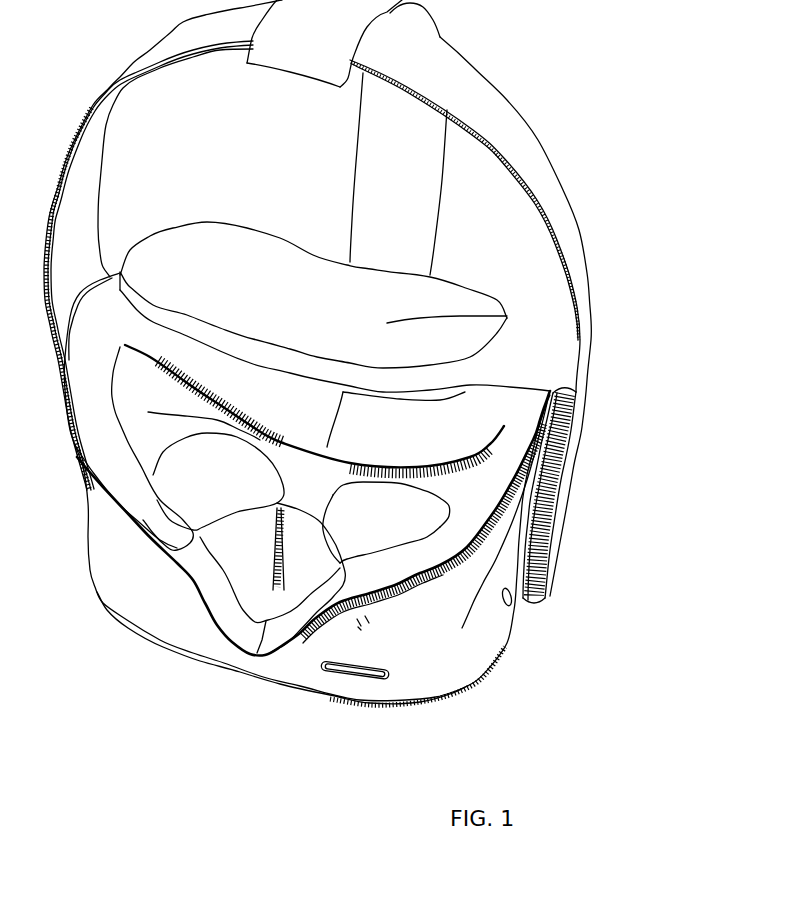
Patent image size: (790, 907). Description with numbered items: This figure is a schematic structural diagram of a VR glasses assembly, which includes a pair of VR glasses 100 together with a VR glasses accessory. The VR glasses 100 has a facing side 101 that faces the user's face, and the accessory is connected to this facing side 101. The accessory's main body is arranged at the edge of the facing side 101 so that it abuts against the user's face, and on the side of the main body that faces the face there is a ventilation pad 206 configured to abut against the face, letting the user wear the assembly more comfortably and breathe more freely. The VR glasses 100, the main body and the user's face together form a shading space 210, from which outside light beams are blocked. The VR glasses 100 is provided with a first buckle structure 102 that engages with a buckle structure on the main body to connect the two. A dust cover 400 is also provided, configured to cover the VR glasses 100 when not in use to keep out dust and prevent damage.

The VR glasses 100 is at (453, 630).
The facing side 101 is at (480, 555).
The first buckle structure 102 is at (373, 623).
The ventilation pad 206 is at (447, 506).
The shading space 210 is at (367, 527).
The dust cover 400 is at (387, 323).